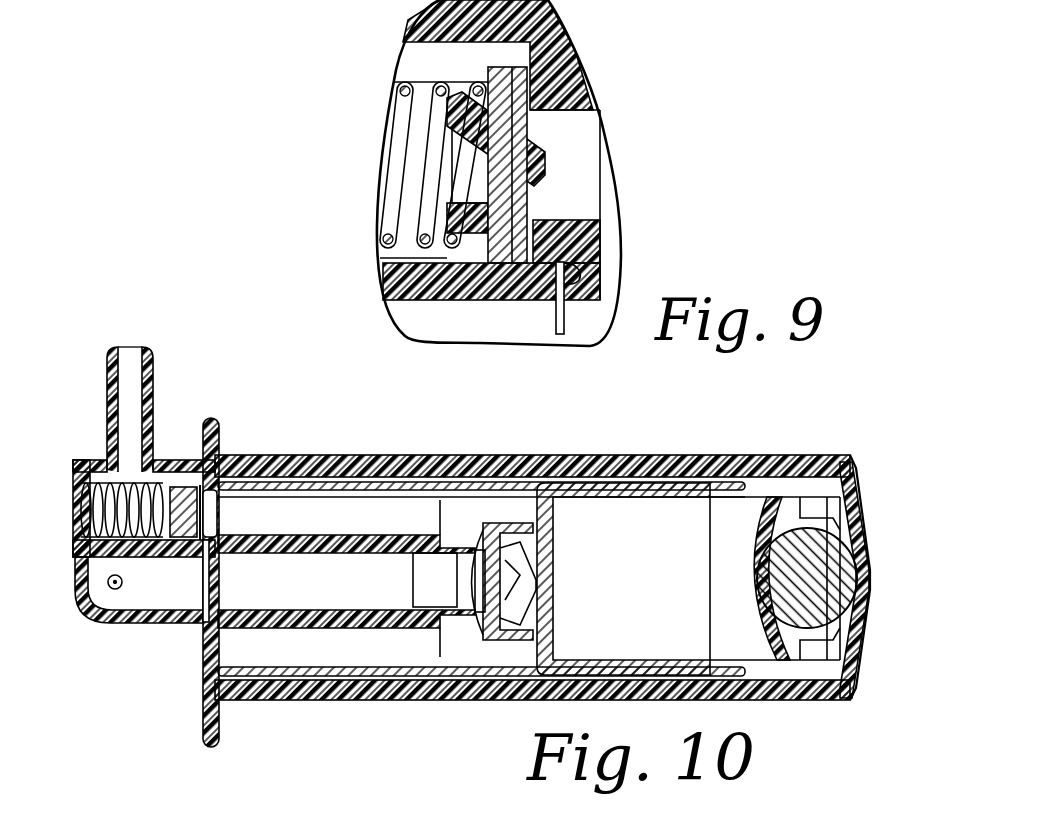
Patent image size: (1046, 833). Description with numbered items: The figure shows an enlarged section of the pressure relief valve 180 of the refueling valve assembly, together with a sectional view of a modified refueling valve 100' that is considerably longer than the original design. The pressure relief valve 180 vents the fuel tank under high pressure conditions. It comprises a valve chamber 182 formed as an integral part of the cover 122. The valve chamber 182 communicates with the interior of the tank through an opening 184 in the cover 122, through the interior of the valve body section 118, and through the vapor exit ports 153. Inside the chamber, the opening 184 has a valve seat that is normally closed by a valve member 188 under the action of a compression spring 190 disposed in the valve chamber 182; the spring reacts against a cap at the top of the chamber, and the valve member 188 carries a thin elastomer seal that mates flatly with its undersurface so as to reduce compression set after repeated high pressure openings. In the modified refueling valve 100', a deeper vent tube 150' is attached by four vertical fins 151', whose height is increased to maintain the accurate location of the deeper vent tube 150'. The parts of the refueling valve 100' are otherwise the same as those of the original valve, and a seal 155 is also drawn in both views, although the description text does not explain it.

In FIG. 10, the refueling valve 100' is at (171, 485).
In FIG. 10, the valve body section 118 is at (450, 460).
In FIG. 10, the cover 122 is at (199, 722).
In FIG. 10, the vent tube 150' is at (351, 630).
In FIG. 10, the vertical fins 151' is at (549, 579).
In FIG. 10, the vapor exit ports 153 is at (300, 460).
In FIG. 9, the seal 155 is at (560, 280).
In FIG. 10, the seal 155 is at (200, 630).
In FIG. 10, the pressure relief valve 180 is at (93, 463).
In FIG. 9, the valve chamber 182 is at (383, 255).
In FIG. 10, the valve chamber 182 is at (130, 473).
In FIG. 9, the opening 184 is at (590, 197).
In FIG. 10, the opening 184 is at (210, 507).
In FIG. 9, the valve member 188 is at (503, 130).
In FIG. 9, the compression spring 190 is at (393, 163).